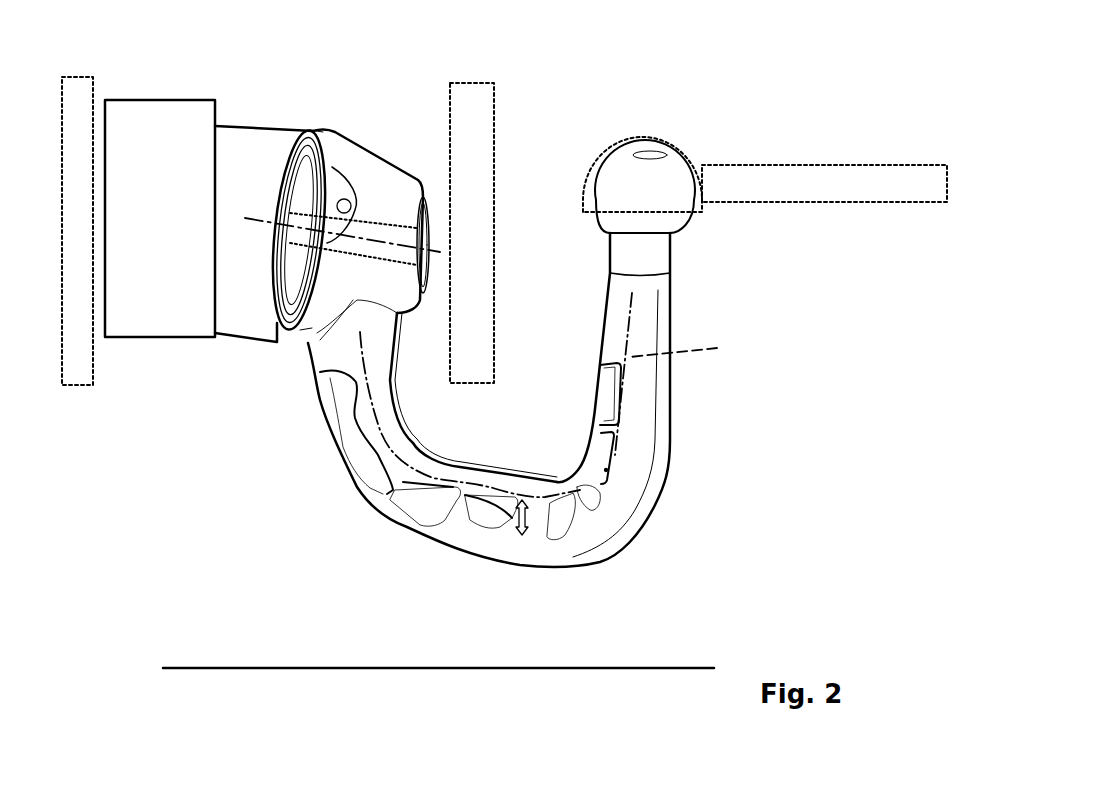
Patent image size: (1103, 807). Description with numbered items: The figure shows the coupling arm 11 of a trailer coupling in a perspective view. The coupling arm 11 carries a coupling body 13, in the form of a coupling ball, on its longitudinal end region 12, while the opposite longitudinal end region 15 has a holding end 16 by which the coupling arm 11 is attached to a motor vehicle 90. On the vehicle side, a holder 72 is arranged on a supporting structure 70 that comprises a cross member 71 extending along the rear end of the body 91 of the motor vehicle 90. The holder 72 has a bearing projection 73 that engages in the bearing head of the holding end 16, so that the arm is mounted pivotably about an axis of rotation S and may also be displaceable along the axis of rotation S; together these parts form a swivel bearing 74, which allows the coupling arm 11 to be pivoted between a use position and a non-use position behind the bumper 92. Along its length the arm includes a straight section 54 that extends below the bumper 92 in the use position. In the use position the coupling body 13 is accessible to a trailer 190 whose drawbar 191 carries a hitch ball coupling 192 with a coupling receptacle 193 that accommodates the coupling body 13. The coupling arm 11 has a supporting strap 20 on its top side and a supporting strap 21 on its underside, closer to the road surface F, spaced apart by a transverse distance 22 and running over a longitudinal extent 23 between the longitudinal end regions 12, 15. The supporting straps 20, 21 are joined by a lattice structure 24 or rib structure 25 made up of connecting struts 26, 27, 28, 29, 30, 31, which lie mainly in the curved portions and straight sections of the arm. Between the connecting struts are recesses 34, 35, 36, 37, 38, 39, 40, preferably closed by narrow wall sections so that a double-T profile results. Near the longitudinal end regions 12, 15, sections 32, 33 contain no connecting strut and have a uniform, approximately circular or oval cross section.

The coupling arm 11 is at (595, 228).
The longitudinal end region 12 is at (660, 293).
The coupling body 13 is at (688, 222).
The longitudinal end region 15 is at (323, 362).
The holding end 16 is at (357, 126).
The supporting strap 20 is at (493, 482).
The supporting strap 21 is at (405, 523).
The transverse distance 22 is at (473, 503).
The longitudinal extent 23 is at (693, 343).
The lattice structure 24 is at (390, 511).
The rib structure 25 is at (446, 490).
The connecting strut 26 is at (390, 493).
The connecting strut 27 is at (465, 520).
The connecting strut 28 is at (543, 540).
The connecting strut 29 is at (577, 503).
The connecting strut 30 is at (592, 488).
The connecting strut 31 is at (607, 427).
The section 32 is at (382, 360).
The section 33 is at (653, 323).
The recess 34 is at (347, 428).
The recess 35 is at (407, 523).
The recess 36 is at (520, 515).
The recess 37 is at (563, 533).
The recess 38 is at (582, 490).
The recess 39 is at (607, 463).
The recess 40 is at (613, 393).
The straight section 54 is at (431, 11).
The supporting structure 70 is at (220, 86).
The cross member 71 is at (157, 110).
The holder 72 is at (243, 133).
The bearing projection 73 is at (363, 223).
The swivel bearing 74 is at (360, 217).
The motor vehicle 90 is at (104, 68).
The body 91 is at (75, 76).
The bumper 92 is at (478, 95).
The trailer 190 is at (770, 148).
The drawbar 191 is at (843, 165).
The hitch ball coupling 192 is at (670, 147).
The coupling receptacle 193 is at (603, 152).
The axis of rotation S is at (250, 215).
The road surface F is at (197, 665).